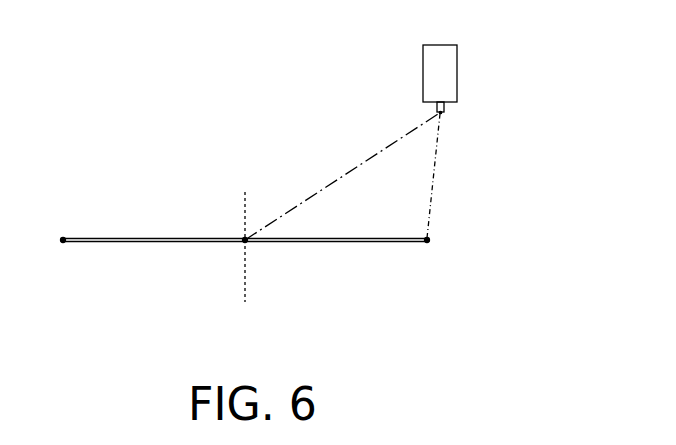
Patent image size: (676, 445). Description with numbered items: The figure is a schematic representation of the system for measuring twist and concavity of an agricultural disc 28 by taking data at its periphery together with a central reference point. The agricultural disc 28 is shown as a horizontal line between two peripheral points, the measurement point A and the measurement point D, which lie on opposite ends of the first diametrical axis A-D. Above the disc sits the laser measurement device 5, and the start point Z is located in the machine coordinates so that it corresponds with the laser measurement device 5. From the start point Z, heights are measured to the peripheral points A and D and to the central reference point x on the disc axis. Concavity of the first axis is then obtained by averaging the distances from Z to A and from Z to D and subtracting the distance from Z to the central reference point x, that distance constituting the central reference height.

The laser measurement device 5 is at (459, 70).
The agricultural disc 28 is at (343, 249).
The start point Z is at (446, 109).
The measurement point A is at (441, 183).
The measurement point D is at (46, 240).
The central reference point x is at (236, 228).